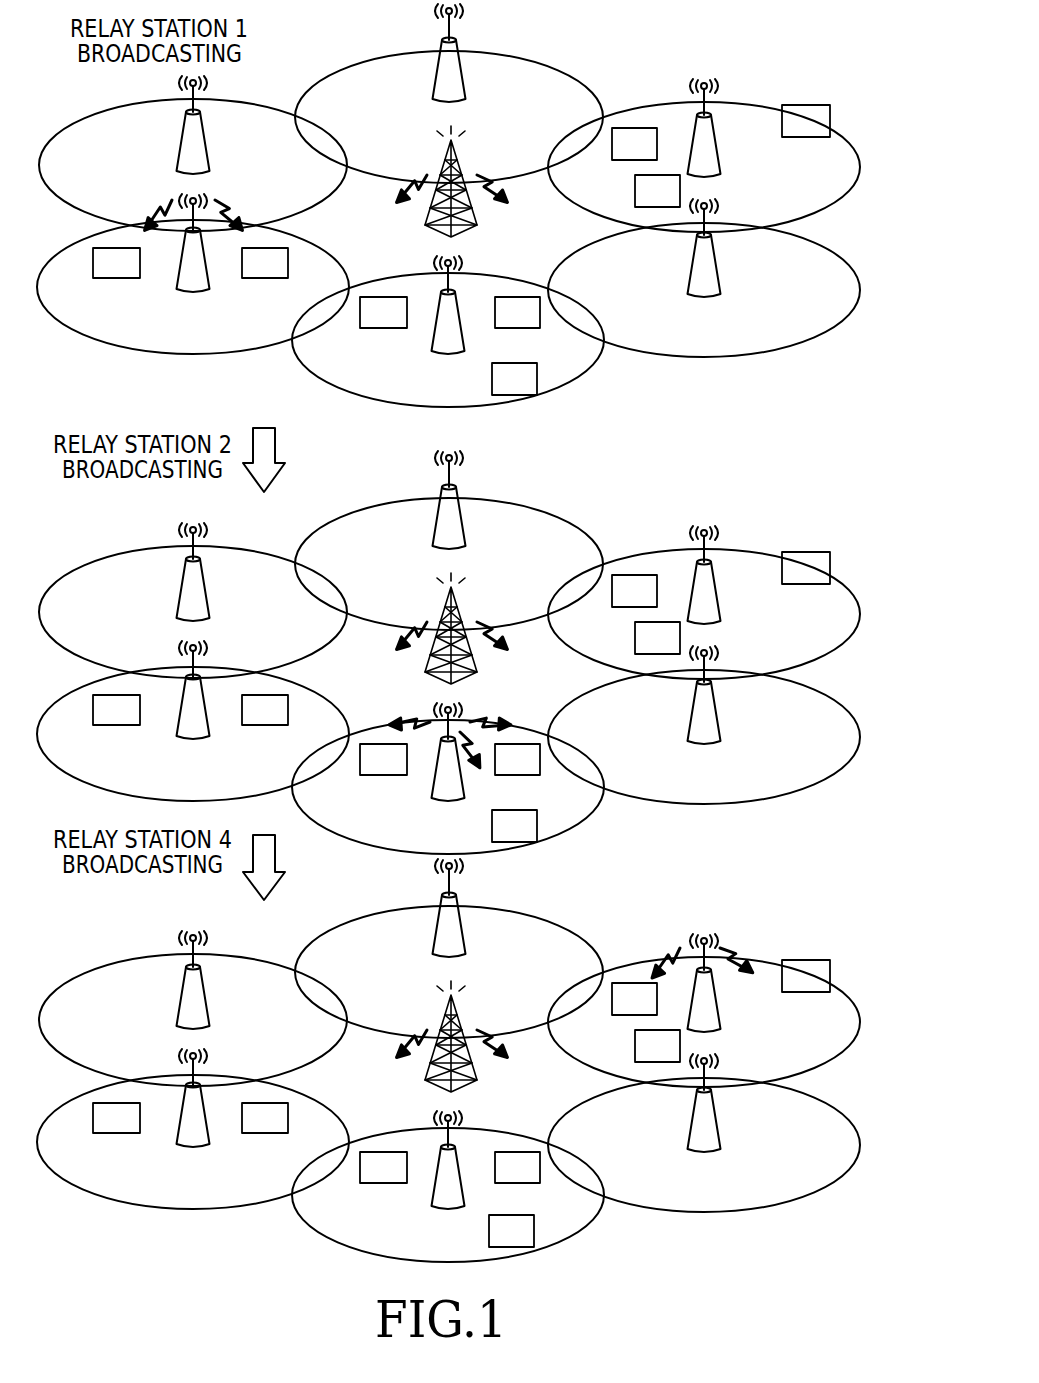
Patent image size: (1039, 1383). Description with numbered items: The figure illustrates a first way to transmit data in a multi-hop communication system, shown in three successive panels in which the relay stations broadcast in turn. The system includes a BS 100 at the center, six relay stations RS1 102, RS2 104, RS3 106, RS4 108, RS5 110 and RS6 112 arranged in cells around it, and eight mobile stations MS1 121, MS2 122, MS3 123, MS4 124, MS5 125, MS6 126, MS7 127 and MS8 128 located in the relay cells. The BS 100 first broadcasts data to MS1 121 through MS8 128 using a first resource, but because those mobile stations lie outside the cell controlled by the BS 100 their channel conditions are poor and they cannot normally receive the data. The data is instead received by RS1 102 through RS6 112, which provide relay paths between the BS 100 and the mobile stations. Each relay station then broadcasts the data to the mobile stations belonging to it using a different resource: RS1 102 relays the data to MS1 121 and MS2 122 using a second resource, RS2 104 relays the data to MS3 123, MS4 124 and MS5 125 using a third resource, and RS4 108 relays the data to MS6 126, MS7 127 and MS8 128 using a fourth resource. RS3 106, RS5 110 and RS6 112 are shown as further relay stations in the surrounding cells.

The BS 100 is at (461, 624).
The RS1 102 is at (193, 697).
The RS2 104 is at (450, 757).
The RS3 106 is at (703, 702).
The RS4 108 is at (711, 564).
The RS5 110 is at (477, 493).
The RS6 112 is at (225, 562).
The MS1 121 is at (117, 278).
The MS2 122 is at (265, 278).
The MS3 123 is at (383, 328).
The MS4 124 is at (540, 313).
The MS5 125 is at (512, 395).
The MS6 126 is at (808, 137).
The MS7 127 is at (635, 195).
The MS8 128 is at (633, 160).